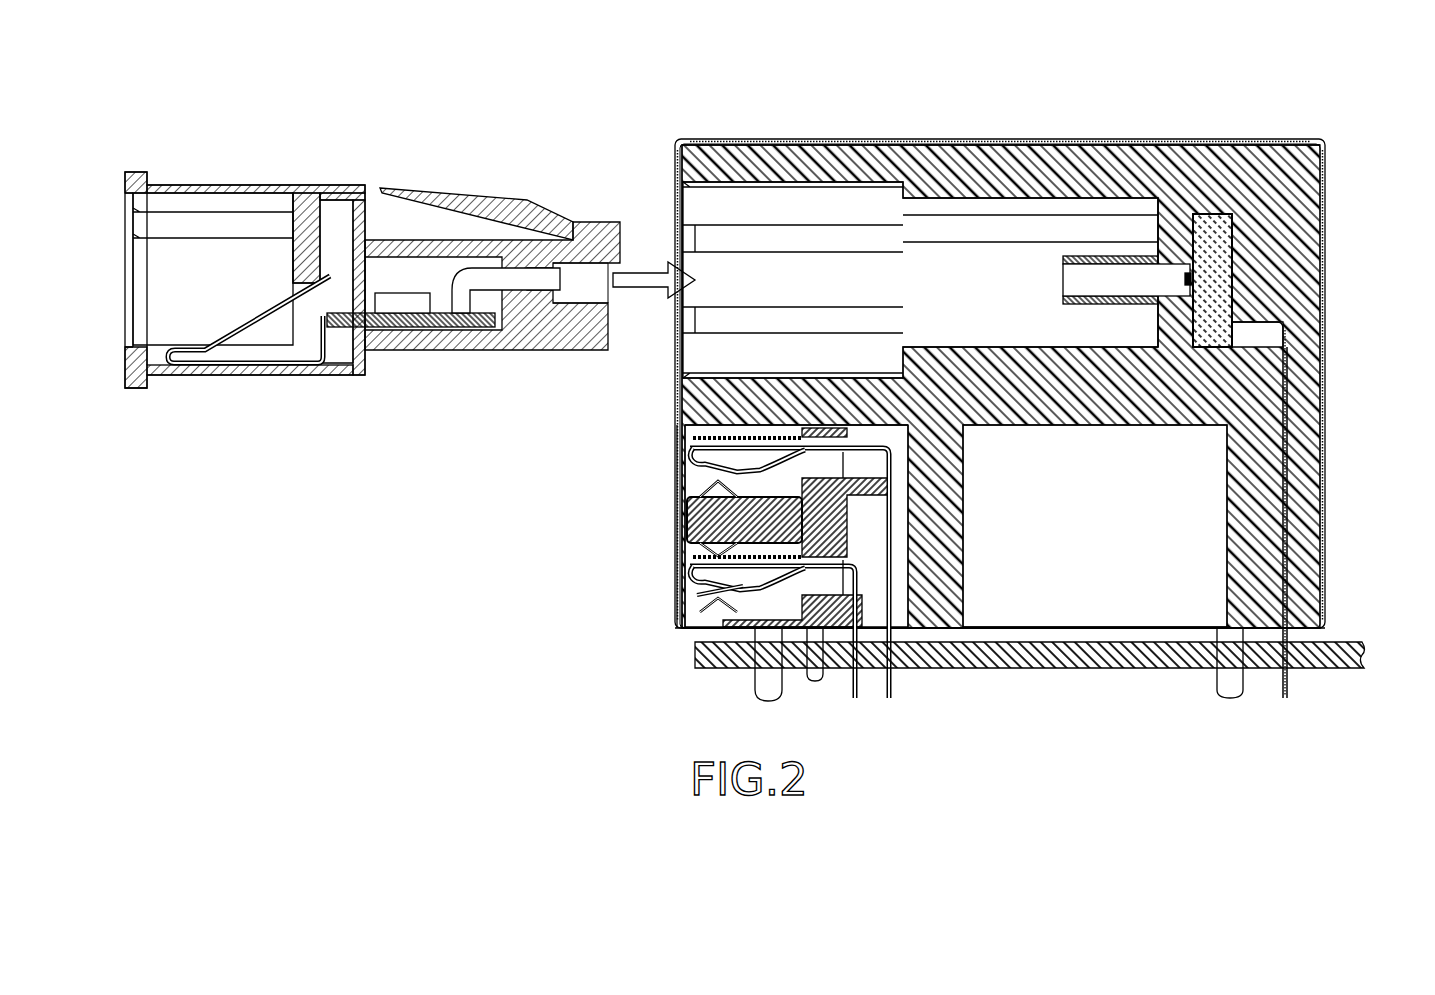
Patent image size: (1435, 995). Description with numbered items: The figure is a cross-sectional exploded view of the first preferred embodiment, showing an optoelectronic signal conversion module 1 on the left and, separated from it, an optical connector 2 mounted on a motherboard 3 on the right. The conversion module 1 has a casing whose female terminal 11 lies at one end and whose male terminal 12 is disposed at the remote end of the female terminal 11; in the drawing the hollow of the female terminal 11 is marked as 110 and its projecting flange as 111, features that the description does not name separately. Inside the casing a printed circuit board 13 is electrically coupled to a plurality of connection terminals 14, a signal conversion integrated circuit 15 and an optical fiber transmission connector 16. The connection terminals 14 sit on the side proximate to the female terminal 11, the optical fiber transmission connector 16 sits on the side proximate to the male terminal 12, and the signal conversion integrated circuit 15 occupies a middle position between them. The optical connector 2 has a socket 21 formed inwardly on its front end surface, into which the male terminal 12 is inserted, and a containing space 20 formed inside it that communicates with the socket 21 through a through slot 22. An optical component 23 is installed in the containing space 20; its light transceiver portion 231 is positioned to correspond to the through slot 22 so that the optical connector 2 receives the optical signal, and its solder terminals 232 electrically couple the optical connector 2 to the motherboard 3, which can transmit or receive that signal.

The optoelectronic signal conversion module 1 is at (331, 146).
The female terminal 11 is at (112, 178).
The receiving cavity 110 is at (143, 285).
The flange 111 is at (132, 398).
The male terminal 12 is at (581, 352).
The printed circuit board 13 is at (422, 330).
The connection terminals 14 is at (271, 342).
The signal conversion integrated circuit 15 is at (403, 298).
The optical fiber transmission connector 16 is at (538, 276).
The optical connector 2 is at (996, 108).
The containing space 20 is at (1324, 300).
The socket 21 is at (684, 201).
The through slot 22 is at (1097, 272).
The optical component 23 is at (1213, 230).
The light transceiver portion 231 is at (1170, 256).
The solder terminals 232 is at (1288, 510).
The motherboard 3 is at (716, 678).